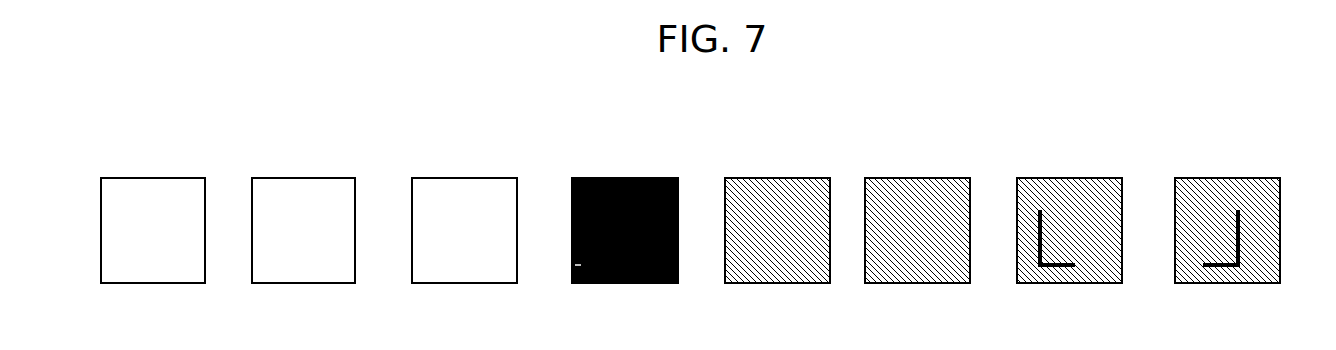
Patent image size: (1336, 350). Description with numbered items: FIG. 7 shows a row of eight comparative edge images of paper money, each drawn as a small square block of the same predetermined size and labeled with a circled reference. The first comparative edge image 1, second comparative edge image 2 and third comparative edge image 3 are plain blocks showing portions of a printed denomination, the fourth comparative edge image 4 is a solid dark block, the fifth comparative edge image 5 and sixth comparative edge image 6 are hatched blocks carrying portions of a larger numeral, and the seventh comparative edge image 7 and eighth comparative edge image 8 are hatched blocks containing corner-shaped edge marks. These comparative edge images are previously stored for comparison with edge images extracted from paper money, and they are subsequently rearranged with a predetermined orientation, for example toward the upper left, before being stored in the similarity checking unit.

The comparative edge image 1 is at (101, 178).
The comparative edge image 2 is at (355, 178).
The comparative edge image 3 is at (412, 283).
The comparative edge image 4 is at (678, 283).
The comparative edge image 5 is at (725, 178).
The comparative edge image 6 is at (970, 178).
The comparative edge image 7 is at (1017, 283).
The comparative edge image 8 is at (1280, 283).